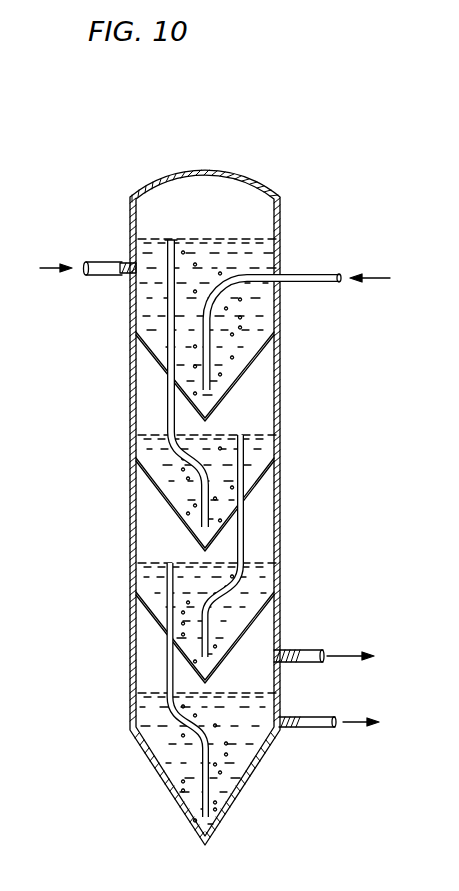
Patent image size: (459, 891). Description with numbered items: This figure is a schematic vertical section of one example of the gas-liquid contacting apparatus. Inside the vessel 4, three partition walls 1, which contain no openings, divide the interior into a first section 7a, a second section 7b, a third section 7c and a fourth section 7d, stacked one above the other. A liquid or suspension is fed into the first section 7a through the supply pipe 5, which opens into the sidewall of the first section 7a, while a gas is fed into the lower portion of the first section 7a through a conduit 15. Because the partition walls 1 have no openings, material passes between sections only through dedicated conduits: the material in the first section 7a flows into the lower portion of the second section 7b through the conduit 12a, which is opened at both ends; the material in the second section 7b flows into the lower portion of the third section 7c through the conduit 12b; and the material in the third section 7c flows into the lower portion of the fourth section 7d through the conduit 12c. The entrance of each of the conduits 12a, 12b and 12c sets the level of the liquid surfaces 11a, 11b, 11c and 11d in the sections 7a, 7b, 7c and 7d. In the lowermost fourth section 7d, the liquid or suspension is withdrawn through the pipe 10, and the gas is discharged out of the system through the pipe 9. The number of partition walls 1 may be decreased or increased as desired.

The partition wall 1 is at (248, 366).
The vessel 4 is at (130, 224).
The supply pipe 5 is at (103, 266).
The first section 7a is at (143, 296).
The second section 7b is at (143, 450).
The third section 7c is at (143, 584).
The fourth section 7d is at (163, 750).
The pipe 9 is at (308, 652).
The pipe 10 is at (318, 727).
The liquid surface 11a is at (258, 238).
The liquid surface 11b is at (258, 432).
The liquid surface 11c is at (258, 564).
The liquid surface 11d is at (258, 693).
The conduit 12a is at (168, 404).
The conduit 12b is at (245, 533).
The conduit 12c is at (168, 648).
The conduit 15 is at (312, 285).